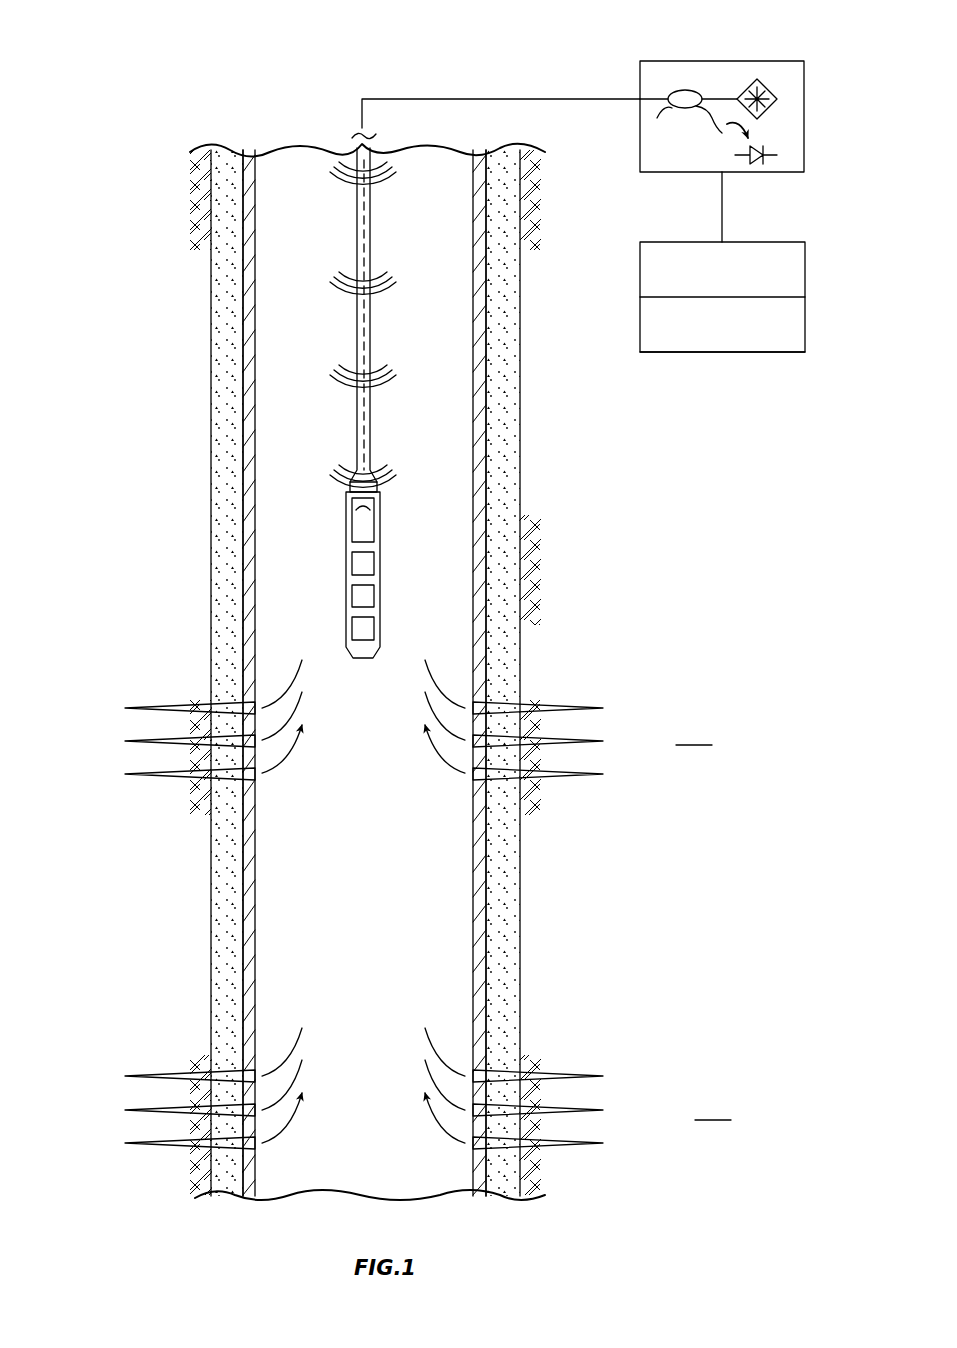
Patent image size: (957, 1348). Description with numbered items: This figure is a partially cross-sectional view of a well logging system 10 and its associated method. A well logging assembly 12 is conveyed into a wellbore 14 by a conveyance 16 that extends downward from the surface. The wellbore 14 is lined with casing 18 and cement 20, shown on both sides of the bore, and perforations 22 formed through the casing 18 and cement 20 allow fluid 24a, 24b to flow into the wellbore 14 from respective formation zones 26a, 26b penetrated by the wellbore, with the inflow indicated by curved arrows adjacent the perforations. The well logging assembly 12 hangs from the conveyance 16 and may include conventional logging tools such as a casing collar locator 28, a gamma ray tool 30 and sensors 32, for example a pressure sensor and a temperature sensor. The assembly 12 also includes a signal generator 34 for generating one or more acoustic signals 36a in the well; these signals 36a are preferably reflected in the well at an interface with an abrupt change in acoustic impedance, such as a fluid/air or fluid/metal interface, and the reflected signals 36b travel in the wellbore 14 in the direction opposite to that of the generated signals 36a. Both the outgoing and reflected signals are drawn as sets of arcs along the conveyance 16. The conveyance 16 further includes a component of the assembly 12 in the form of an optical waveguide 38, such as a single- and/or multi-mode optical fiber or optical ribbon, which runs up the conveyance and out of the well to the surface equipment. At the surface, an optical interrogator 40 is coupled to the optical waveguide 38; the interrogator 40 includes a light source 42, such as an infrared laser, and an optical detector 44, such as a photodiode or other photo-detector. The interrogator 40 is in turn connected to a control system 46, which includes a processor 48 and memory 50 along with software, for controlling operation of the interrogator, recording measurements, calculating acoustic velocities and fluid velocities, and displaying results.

The well system 10 is at (175, 118).
The well logging assembly 12 is at (390, 540).
The wellbore 14 is at (475, 912).
The conveyance 16 is at (356, 318).
The casing 18 is at (243, 923).
The cement 20 is at (210, 958).
The perforations 22 is at (178, 704).
The fluid 24a is at (415, 1045).
The fluid 24b is at (288, 748).
The formation zone 26a is at (711, 1108).
The formation zone 26b is at (693, 733).
The casing collar locator 28 is at (352, 622).
The gamma ray tool 30 is at (375, 595).
The sensors 32 is at (352, 563).
The signal generator 34 is at (352, 517).
The acoustic signals 36a is at (382, 278).
The reflected signals 36b is at (348, 187).
The optical waveguide 38 is at (478, 98).
The optical interrogator 40 is at (637, 148).
The light source 42 is at (765, 85).
The optical detector 44 is at (768, 158).
The control system 46 is at (638, 312).
The processor 48 is at (680, 242).
The memory 50 is at (733, 352).